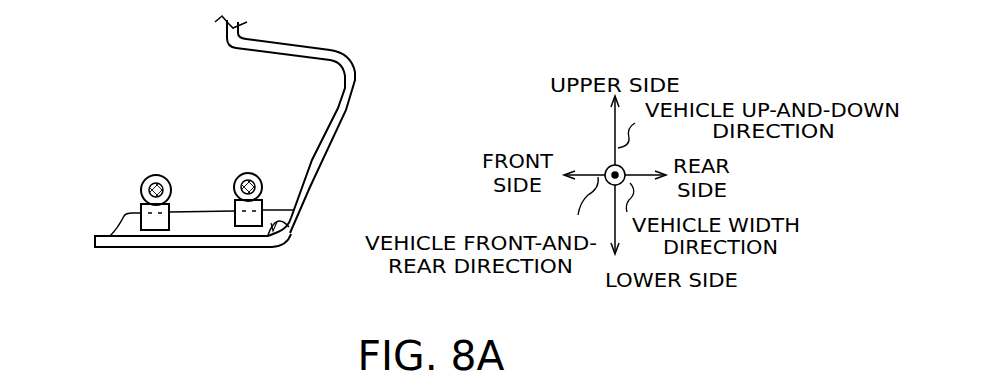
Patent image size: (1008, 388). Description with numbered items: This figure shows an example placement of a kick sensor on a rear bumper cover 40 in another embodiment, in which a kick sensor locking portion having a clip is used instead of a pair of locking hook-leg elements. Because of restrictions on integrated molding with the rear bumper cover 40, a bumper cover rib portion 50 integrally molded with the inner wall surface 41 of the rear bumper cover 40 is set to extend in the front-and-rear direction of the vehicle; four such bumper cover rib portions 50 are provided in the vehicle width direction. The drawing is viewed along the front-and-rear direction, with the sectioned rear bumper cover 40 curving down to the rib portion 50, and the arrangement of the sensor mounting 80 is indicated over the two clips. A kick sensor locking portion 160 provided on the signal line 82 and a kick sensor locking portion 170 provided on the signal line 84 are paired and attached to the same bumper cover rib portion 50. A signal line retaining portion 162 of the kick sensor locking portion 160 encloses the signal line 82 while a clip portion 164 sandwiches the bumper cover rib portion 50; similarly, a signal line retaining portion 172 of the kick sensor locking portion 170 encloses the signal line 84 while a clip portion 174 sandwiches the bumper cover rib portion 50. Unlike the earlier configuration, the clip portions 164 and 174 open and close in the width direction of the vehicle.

The rear bumper cover 40 is at (343, 132).
The inner wall surface 41 is at (290, 235).
The bumper cover rib portion 50 is at (130, 230).
The fastening structure 80 is at (188, 126).
The signal line 82 is at (153, 175).
The signal line 84 is at (247, 173).
The kick sensor locking portion 160 is at (65, 160).
The signal line retaining portion 162 is at (141, 188).
The clip portion 164 is at (141, 210).
The kick sensor locking portion 170 is at (378, 173).
The signal line retaining portion 172 is at (262, 185).
The clip portion 174 is at (262, 200).